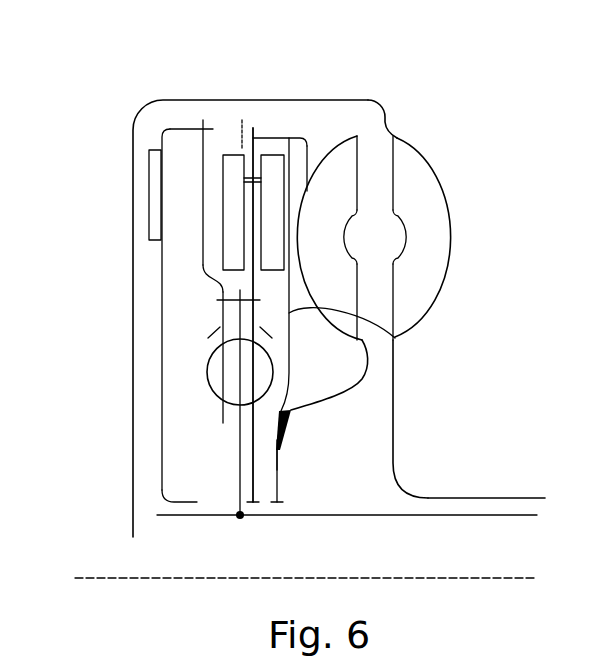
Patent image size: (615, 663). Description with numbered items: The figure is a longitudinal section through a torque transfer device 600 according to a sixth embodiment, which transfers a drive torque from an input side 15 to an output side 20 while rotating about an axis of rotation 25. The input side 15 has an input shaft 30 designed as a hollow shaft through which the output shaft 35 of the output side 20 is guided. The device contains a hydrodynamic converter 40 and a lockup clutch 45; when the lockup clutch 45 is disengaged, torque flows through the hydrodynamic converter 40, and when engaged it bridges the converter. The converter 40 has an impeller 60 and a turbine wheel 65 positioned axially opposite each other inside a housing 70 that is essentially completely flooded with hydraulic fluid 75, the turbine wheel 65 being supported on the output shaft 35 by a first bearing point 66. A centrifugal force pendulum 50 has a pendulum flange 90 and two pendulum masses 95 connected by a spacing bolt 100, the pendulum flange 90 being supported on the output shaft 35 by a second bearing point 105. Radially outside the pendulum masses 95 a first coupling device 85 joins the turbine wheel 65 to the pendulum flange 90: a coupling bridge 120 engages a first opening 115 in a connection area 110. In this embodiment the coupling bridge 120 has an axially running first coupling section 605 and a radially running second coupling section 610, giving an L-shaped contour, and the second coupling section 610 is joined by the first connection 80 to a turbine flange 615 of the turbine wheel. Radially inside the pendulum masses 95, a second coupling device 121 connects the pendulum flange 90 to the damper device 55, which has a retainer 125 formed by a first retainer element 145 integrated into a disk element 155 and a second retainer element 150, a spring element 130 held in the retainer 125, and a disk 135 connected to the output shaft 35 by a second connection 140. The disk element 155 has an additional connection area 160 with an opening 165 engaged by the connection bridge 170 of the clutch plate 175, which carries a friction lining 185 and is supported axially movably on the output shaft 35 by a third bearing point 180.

The input side 15 is at (470, 478).
The output side 20 is at (487, 522).
The axis of rotation 25 is at (525, 577).
The input shaft 30 is at (520, 498).
The output shaft 35 is at (452, 518).
The hydrodynamic converter 40 is at (414, 135).
The lockup clutch 45 is at (203, 128).
The centrifugal force pendulum 50 is at (272, 138).
The damper device 55 is at (198, 413).
The impeller 60 is at (432, 232).
The turbine wheel 65 is at (340, 188).
The first bearing point 66 is at (280, 505).
The housing 70 is at (380, 100).
The hydraulic fluid 75 is at (382, 297).
The first connection 80 is at (283, 440).
The first coupling device 85 is at (302, 155).
The pendulum flange 90 is at (290, 334).
The pendulum masses 95 is at (270, 222).
The spacing bolt 100 is at (244, 177).
The second bearing point 105 is at (255, 505).
The connection area 110 is at (242, 120).
The first opening 115 is at (256, 128).
The coupling bridge 120 is at (318, 160).
The second coupling device 121 is at (212, 310).
The retainer 125 is at (184, 348).
The spring element 130 is at (275, 397).
The disk 135 is at (238, 470).
The second connection 140 is at (240, 515).
The first retainer element 145 is at (225, 413).
The second retainer element 150 is at (278, 358).
The disk element 155 is at (203, 265).
The additional connection area 160 is at (203, 117).
The opening 165 is at (163, 140).
The connection bridge 170 is at (172, 120).
The clutch plate 175 is at (152, 396).
The third bearing point 180 is at (183, 503).
The friction lining 185 is at (148, 213).
The torque transfer device 600 is at (492, 134).
The first coupling section 605 is at (298, 132).
The second coupling section 610 is at (397, 334).
The turbine flange 615 is at (277, 487).